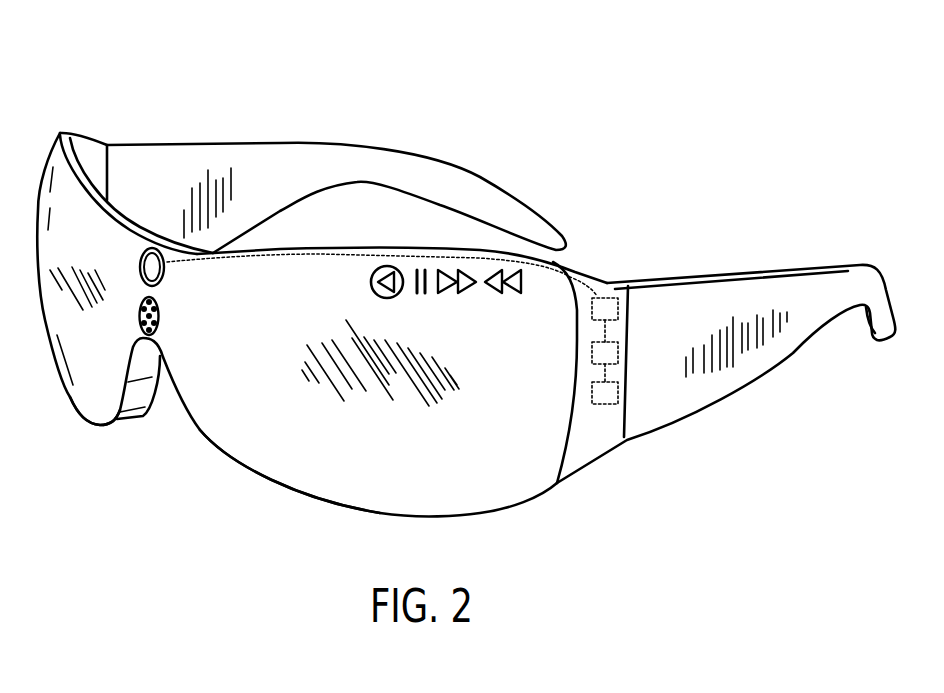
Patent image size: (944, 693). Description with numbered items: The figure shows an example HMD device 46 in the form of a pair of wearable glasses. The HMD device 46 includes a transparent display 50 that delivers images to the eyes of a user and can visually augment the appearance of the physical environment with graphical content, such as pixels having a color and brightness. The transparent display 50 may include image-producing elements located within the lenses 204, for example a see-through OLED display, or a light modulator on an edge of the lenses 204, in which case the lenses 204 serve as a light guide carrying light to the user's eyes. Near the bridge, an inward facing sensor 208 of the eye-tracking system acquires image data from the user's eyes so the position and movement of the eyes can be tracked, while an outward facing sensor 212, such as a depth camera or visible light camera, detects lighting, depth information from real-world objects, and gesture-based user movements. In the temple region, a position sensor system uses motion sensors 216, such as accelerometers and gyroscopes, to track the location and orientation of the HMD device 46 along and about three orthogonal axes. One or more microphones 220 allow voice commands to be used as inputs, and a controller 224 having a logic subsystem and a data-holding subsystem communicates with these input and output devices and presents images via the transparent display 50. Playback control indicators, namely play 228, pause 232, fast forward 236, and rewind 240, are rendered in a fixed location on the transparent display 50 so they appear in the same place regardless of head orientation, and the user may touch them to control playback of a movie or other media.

The HMD device 46 is at (476, 72).
The transparent display 50 is at (245, 452).
The lenses 204 is at (92, 390).
The inward facing sensor 208 is at (174, 322).
The outward facing sensor 212 is at (178, 273).
The motion sensors 216 is at (605, 298).
The microphones 220 is at (621, 347).
The controller 224 is at (621, 392).
The play indicator 228 is at (370, 280).
The pause indicator 232 is at (423, 295).
The fast forward indicator 236 is at (438, 295).
The rewind indicator 240 is at (500, 295).